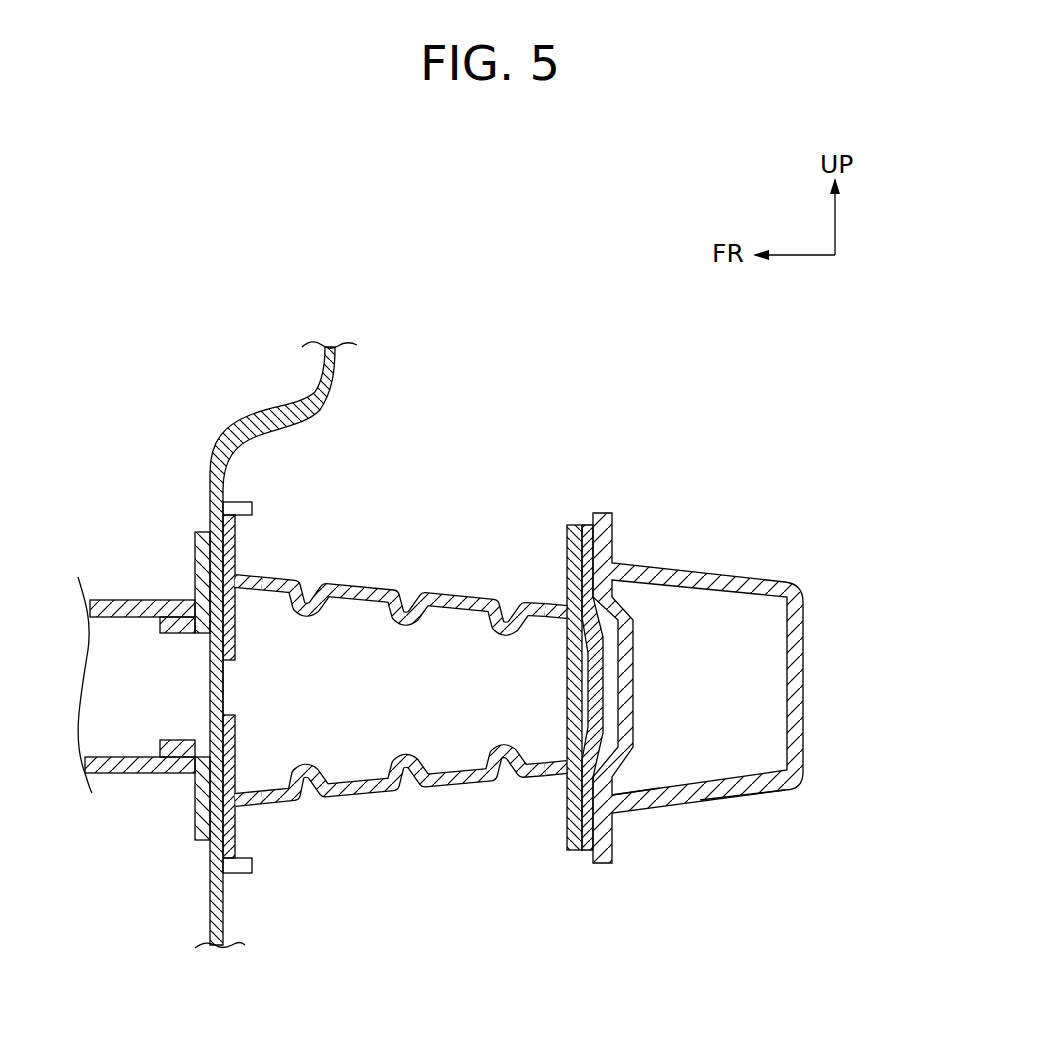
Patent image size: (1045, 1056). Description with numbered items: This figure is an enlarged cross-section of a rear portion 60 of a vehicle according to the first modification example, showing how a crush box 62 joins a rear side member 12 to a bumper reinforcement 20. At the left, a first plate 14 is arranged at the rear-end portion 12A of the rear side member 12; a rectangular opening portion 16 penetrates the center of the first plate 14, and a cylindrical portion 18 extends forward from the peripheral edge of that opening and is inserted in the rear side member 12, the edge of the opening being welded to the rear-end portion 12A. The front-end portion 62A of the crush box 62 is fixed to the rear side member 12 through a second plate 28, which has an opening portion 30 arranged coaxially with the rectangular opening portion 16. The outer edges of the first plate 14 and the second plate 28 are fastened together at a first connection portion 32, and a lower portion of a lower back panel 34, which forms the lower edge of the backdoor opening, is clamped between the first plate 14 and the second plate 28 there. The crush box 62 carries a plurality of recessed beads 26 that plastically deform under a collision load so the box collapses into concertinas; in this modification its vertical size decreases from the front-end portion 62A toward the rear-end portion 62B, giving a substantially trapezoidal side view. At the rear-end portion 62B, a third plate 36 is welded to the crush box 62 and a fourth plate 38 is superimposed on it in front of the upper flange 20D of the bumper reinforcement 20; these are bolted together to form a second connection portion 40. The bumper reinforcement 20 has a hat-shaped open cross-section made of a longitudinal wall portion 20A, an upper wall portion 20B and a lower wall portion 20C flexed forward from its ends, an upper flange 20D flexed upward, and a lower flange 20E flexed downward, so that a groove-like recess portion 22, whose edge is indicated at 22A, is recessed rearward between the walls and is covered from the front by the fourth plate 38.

The rear side member 12 is at (137, 656).
The rear-end portion of the rear side member 12A is at (158, 597).
The first plate 14 is at (200, 530).
The rectangular opening portion 16 is at (207, 640).
The cylindrical portion 18 is at (170, 638).
The bumper reinforcement 20 is at (748, 709).
The longitudinal wall portion 20A is at (806, 636).
The upper wall portion 20B is at (710, 572).
The lower wall portion 20C is at (747, 795).
The upper flange 20D is at (612, 520).
The lower flange 20E is at (613, 845).
The recess portion 22 is at (683, 780).
The edge of opening 22A is at (607, 800).
The recessed beads 26 is at (397, 693).
The second plate 28 is at (247, 500).
The opening portion 30 is at (230, 668).
The first connection portion 32 is at (251, 587).
The lower back panel 34 is at (227, 497).
The third plate 36 is at (572, 525).
The fourth plate 38 is at (590, 522).
The second connection portion 40 is at (604, 601).
The rear portion of the vehicle 60 is at (406, 587).
The crush box 62 is at (401, 636).
The front-end portion of the crush box 62A is at (237, 573).
The rear-end portion of the crush box 62B is at (560, 603).